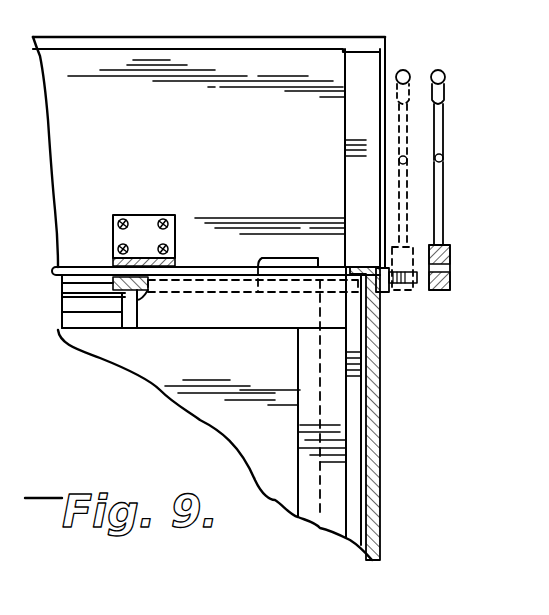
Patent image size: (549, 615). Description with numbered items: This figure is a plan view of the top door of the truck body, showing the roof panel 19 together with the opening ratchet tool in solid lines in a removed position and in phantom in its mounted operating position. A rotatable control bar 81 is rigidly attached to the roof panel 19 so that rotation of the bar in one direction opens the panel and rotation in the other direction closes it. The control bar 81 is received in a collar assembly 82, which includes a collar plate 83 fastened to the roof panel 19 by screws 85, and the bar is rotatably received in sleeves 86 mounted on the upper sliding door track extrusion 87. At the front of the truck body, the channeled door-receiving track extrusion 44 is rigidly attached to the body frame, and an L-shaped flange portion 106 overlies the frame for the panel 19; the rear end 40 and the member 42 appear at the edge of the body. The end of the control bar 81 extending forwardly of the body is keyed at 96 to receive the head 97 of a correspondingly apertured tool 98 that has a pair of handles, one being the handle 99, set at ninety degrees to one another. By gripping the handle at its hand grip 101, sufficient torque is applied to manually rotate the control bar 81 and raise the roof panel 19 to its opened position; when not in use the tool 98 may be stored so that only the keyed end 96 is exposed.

The roof panel 19 is at (204, 132).
The rear end 40 is at (380, 470).
The upper frame member 42 is at (344, 6).
The front track extrusion 44 is at (340, 420).
The control bar 81 is at (91, 270).
The collar assembly 82 is at (123, 292).
The collar plate 83 is at (142, 218).
The screws 85 is at (122, 218).
The sleeves 86 is at (260, 262).
The upper sliding door track extrusion 87 is at (236, 329).
The keyed end 96 is at (402, 283).
The head 97 is at (440, 292).
The tool 98 is at (432, 213).
The handle 99 is at (433, 143).
The hand grip 101 is at (455, 50).
The L-shaped flange portion 106 is at (390, 58).